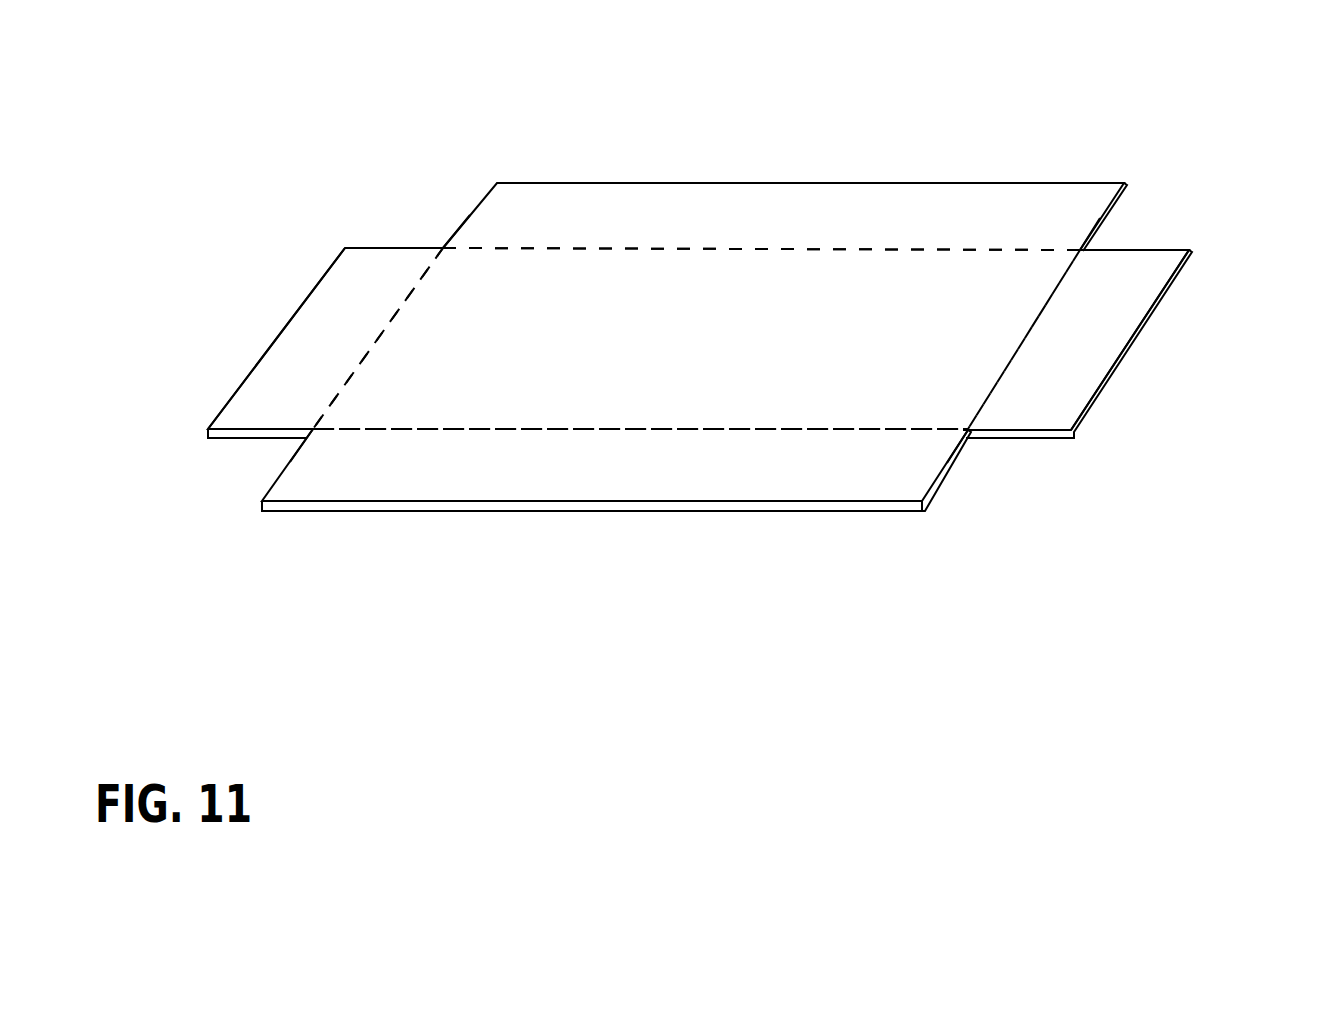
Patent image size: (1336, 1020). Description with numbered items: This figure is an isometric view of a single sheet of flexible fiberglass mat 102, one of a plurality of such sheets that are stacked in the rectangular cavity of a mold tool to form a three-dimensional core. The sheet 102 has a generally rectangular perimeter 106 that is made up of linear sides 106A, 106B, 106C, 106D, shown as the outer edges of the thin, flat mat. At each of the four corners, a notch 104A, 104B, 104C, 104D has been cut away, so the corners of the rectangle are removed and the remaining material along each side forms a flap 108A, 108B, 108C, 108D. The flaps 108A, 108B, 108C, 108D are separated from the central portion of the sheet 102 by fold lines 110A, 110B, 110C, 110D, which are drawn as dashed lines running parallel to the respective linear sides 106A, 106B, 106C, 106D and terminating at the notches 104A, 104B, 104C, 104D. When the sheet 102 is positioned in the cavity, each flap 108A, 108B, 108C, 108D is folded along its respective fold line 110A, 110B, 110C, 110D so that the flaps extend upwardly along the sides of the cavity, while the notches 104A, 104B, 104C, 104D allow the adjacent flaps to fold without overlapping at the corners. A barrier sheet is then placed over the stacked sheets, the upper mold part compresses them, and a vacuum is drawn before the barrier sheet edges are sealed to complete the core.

The sheet of flexible fiberglass mat 102 is at (910, 155).
The notch 104A is at (1100, 241).
The notch 104B is at (971, 440).
The notch 104C is at (280, 438).
The notch 104D is at (440, 235).
The perimeter 106 is at (767, 182).
The linear side 106A is at (605, 502).
The linear side 106B is at (282, 333).
The linear side 106C is at (683, 183).
The linear side 106D is at (1131, 346).
The flap 108A is at (500, 473).
The flap 108B is at (352, 315).
The flap 108C is at (637, 213).
The flap 108D is at (1046, 393).
The fold line 110A is at (430, 430).
The fold line 110B is at (372, 352).
The fold line 110C is at (583, 250).
The fold line 110D is at (1055, 304).